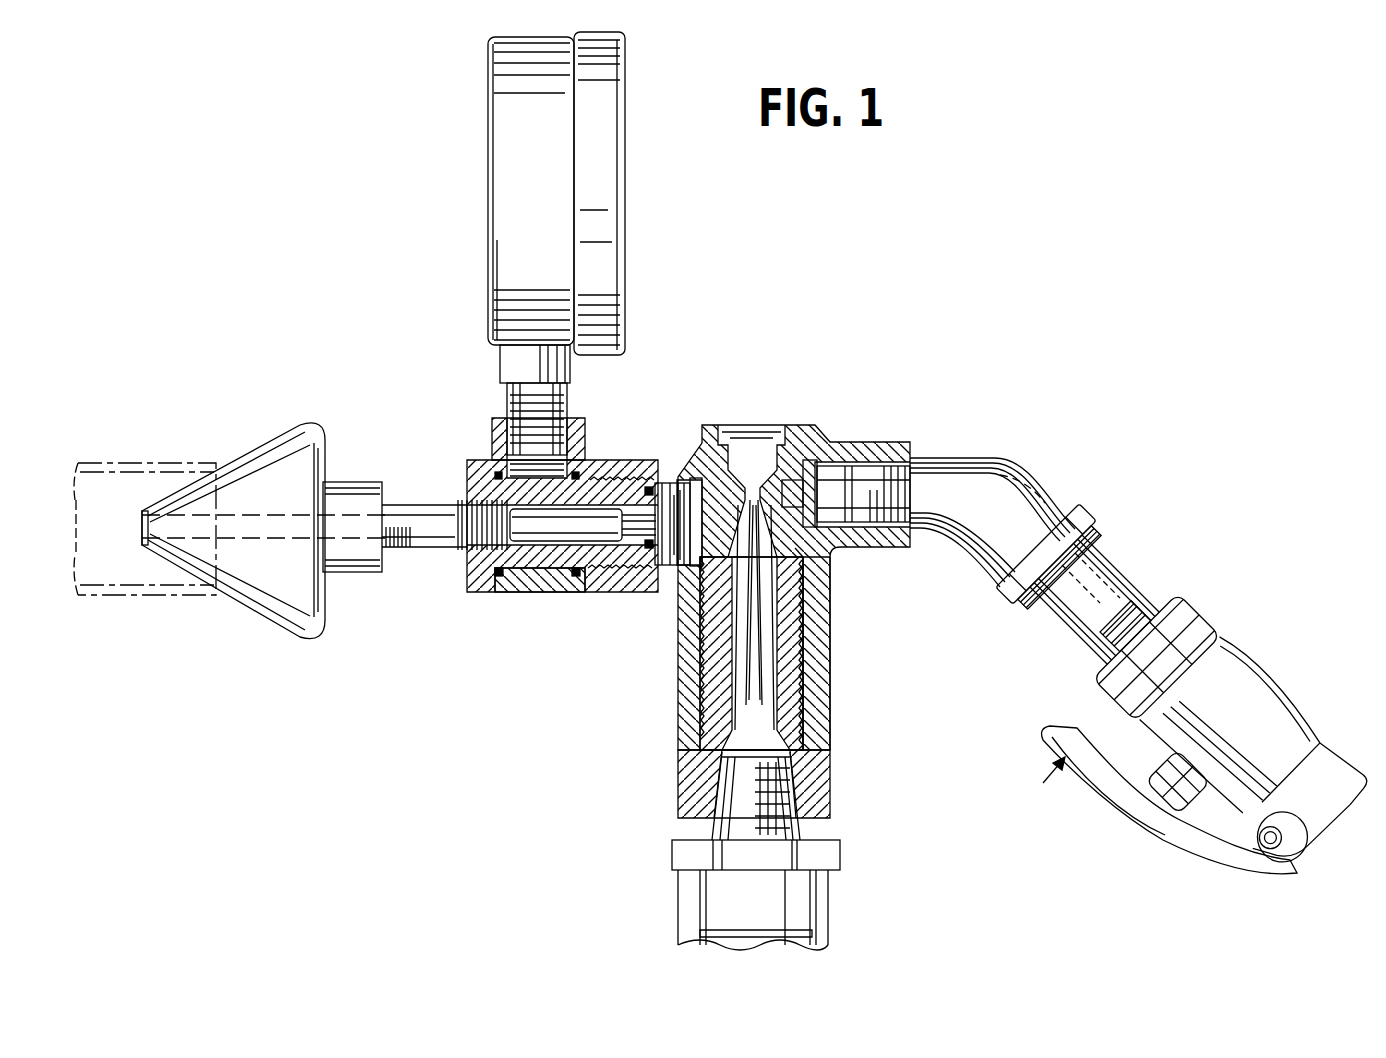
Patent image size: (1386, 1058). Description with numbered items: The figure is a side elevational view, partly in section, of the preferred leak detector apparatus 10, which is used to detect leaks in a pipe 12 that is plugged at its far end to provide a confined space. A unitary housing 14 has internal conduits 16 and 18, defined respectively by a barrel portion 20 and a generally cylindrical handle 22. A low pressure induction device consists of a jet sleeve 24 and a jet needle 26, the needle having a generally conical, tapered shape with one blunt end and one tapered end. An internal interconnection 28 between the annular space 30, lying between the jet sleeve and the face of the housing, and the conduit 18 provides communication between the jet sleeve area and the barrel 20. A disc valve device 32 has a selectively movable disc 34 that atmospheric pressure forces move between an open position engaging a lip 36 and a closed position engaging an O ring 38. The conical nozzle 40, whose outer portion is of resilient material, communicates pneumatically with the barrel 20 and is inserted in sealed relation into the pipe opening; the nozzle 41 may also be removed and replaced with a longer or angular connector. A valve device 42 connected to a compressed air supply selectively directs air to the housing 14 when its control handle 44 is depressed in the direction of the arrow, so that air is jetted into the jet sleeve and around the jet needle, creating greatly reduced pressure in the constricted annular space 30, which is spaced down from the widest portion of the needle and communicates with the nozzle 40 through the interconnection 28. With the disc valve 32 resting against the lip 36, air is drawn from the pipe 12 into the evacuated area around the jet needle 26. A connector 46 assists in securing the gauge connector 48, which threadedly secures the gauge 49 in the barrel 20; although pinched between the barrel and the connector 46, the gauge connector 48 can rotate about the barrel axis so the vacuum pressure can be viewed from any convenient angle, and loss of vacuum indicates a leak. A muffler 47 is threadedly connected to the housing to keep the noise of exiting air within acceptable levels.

The leak detector apparatus 10 is at (872, 408).
The pipe 12 is at (152, 460).
The unitary housing 14 is at (817, 590).
The internal conduit 16 is at (537, 537).
The internal conduit 18 is at (748, 692).
The barrel portion 20 is at (602, 457).
The cylindrical handle 22 is at (818, 703).
The jet sleeve 24 is at (817, 800).
The jet needle 26 is at (702, 637).
The internal interconnection 28 is at (698, 557).
The annular space 30 is at (817, 563).
The disc valve device 32 is at (663, 477).
The movable disc 34 is at (690, 472).
The lip 36 is at (670, 500).
The O ring 38 is at (648, 568).
The nozzle 40 is at (262, 588).
The nozzle 41 is at (428, 535).
The valve device 42 is at (1245, 731).
The control handle 44 is at (1150, 810).
The connector 46 is at (467, 478).
The muffler 47 is at (828, 905).
The gauge connector 48 is at (585, 458).
The gauge 49 is at (612, 200).